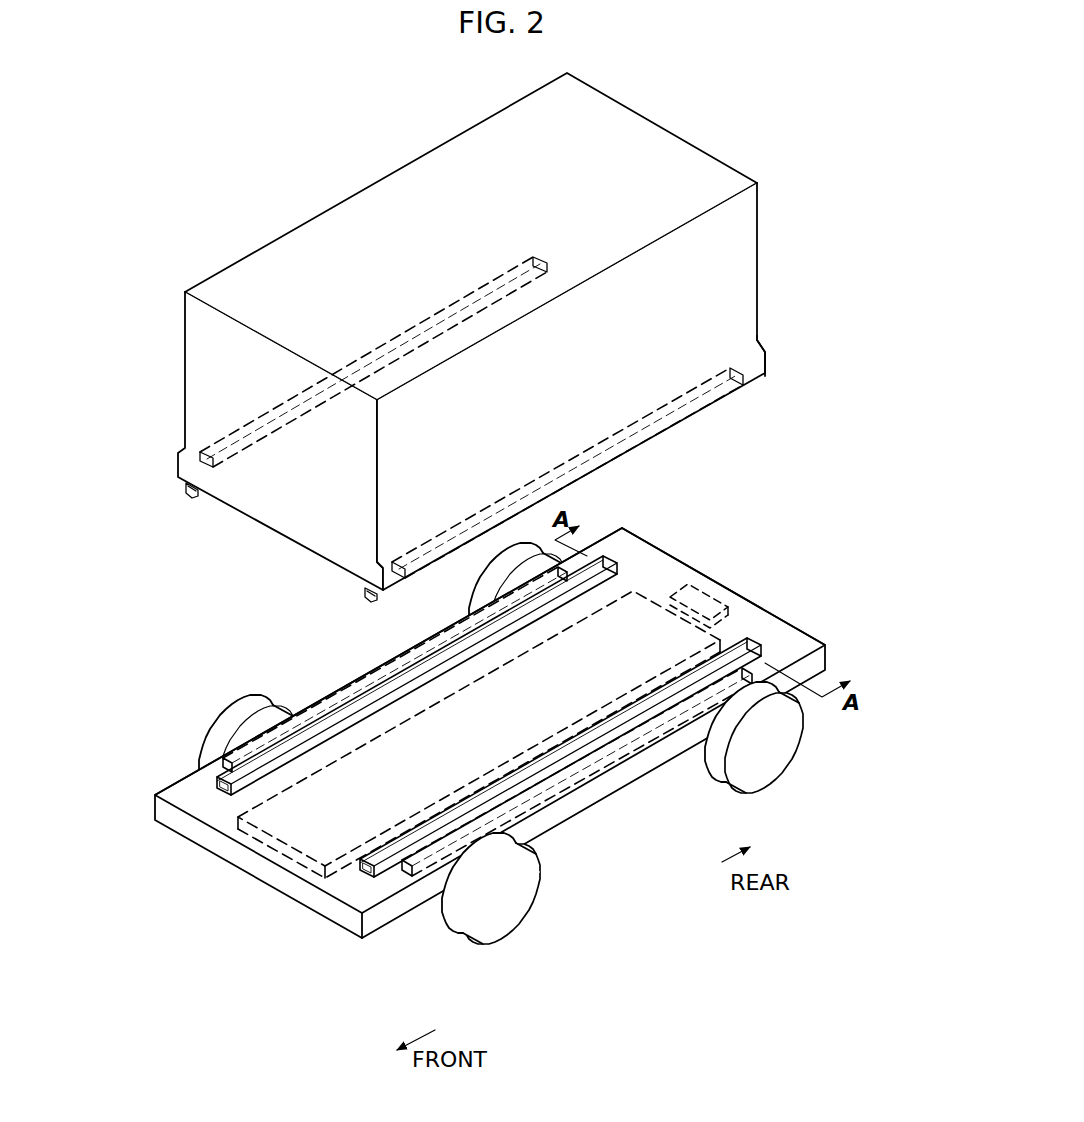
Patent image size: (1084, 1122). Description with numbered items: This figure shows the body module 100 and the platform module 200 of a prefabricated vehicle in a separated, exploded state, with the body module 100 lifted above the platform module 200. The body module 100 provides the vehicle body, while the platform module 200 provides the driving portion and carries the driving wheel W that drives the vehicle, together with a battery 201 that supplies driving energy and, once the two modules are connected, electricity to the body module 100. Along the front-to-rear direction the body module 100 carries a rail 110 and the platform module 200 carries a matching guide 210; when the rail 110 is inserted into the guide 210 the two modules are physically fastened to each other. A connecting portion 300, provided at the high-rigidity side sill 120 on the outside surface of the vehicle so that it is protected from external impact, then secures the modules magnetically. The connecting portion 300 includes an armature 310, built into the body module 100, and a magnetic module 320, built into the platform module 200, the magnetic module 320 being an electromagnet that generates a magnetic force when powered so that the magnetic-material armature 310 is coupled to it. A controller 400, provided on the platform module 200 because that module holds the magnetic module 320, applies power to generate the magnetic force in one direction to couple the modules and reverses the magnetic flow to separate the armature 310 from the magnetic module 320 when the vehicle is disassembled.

The body module 100 is at (499, 337).
The rail 110 is at (188, 489).
The side sill 120 is at (762, 363).
The platform module 200 is at (207, 840).
The battery 201 is at (290, 860).
The guide 210 is at (383, 875).
The connecting portion 300 is at (500, 728).
The armature 310 is at (708, 405).
The magnetic module 320 is at (557, 565).
The controller 400 is at (726, 610).
The driving wheel W is at (505, 920).